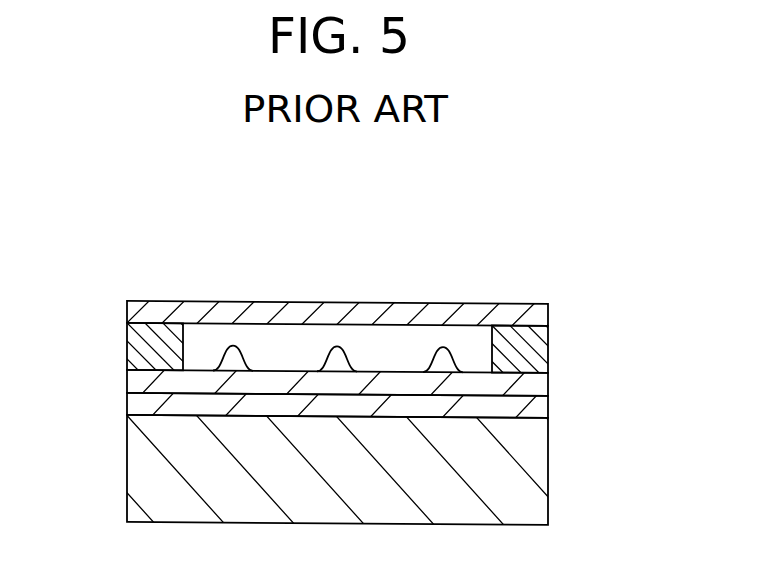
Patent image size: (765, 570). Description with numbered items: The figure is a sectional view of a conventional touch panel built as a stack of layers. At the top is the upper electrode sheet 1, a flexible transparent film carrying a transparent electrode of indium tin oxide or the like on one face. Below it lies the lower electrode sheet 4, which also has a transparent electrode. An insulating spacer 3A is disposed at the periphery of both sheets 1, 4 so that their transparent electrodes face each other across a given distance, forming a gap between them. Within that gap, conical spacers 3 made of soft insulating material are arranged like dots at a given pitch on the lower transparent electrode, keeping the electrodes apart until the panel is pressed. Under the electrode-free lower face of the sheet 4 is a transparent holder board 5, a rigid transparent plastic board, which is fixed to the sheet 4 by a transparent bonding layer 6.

The upper electrode sheet 1 is at (530, 315).
The conical spacer 3 is at (343, 363).
The insulating spacer 3A is at (150, 352).
The lower electrode sheet 4 is at (532, 387).
The transparent bonding layer 6 is at (512, 412).
The transparent holder board 5 is at (498, 478).